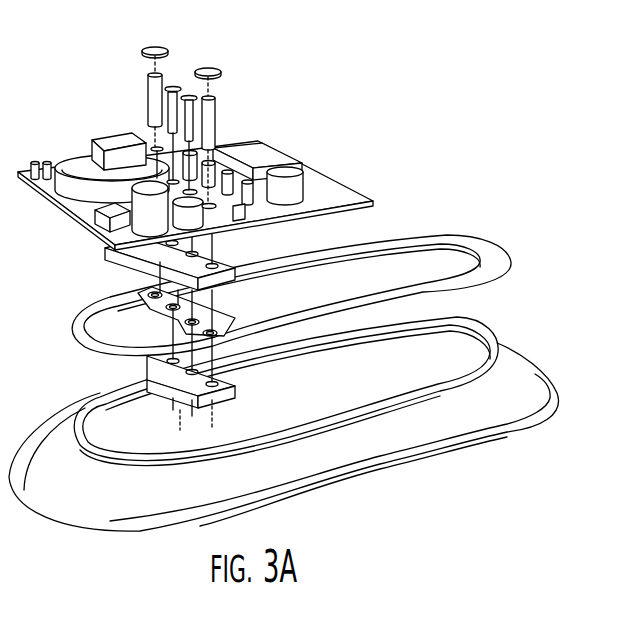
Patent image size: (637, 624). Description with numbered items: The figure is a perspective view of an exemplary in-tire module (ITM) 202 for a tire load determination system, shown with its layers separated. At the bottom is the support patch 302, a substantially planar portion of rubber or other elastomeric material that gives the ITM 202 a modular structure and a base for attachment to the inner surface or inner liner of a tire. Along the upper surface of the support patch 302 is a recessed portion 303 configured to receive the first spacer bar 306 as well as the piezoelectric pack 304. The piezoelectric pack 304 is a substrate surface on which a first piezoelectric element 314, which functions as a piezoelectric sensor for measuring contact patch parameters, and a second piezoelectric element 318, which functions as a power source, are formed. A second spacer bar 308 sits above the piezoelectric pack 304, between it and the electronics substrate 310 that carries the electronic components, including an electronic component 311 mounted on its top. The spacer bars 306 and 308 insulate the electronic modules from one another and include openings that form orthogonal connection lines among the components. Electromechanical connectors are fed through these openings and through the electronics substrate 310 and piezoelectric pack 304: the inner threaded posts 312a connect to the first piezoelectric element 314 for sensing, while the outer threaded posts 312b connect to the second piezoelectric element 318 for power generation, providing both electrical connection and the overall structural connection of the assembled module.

The in-tire module (ITM) 202 is at (428, 76).
The support patch 302 is at (286, 494).
The recessed portion 303 is at (363, 386).
The piezoelectric pack 304 is at (463, 262).
The first spacer bar 306 is at (165, 365).
The second spacer bar 308 is at (158, 256).
The electronics substrate 310 is at (348, 198).
The electronic component 311 is at (112, 140).
The inner threaded posts 312a is at (189, 95).
The outer threaded posts 312b is at (143, 50).
The first piezoelectric element 314 is at (152, 338).
The second piezoelectric element 318 is at (332, 295).